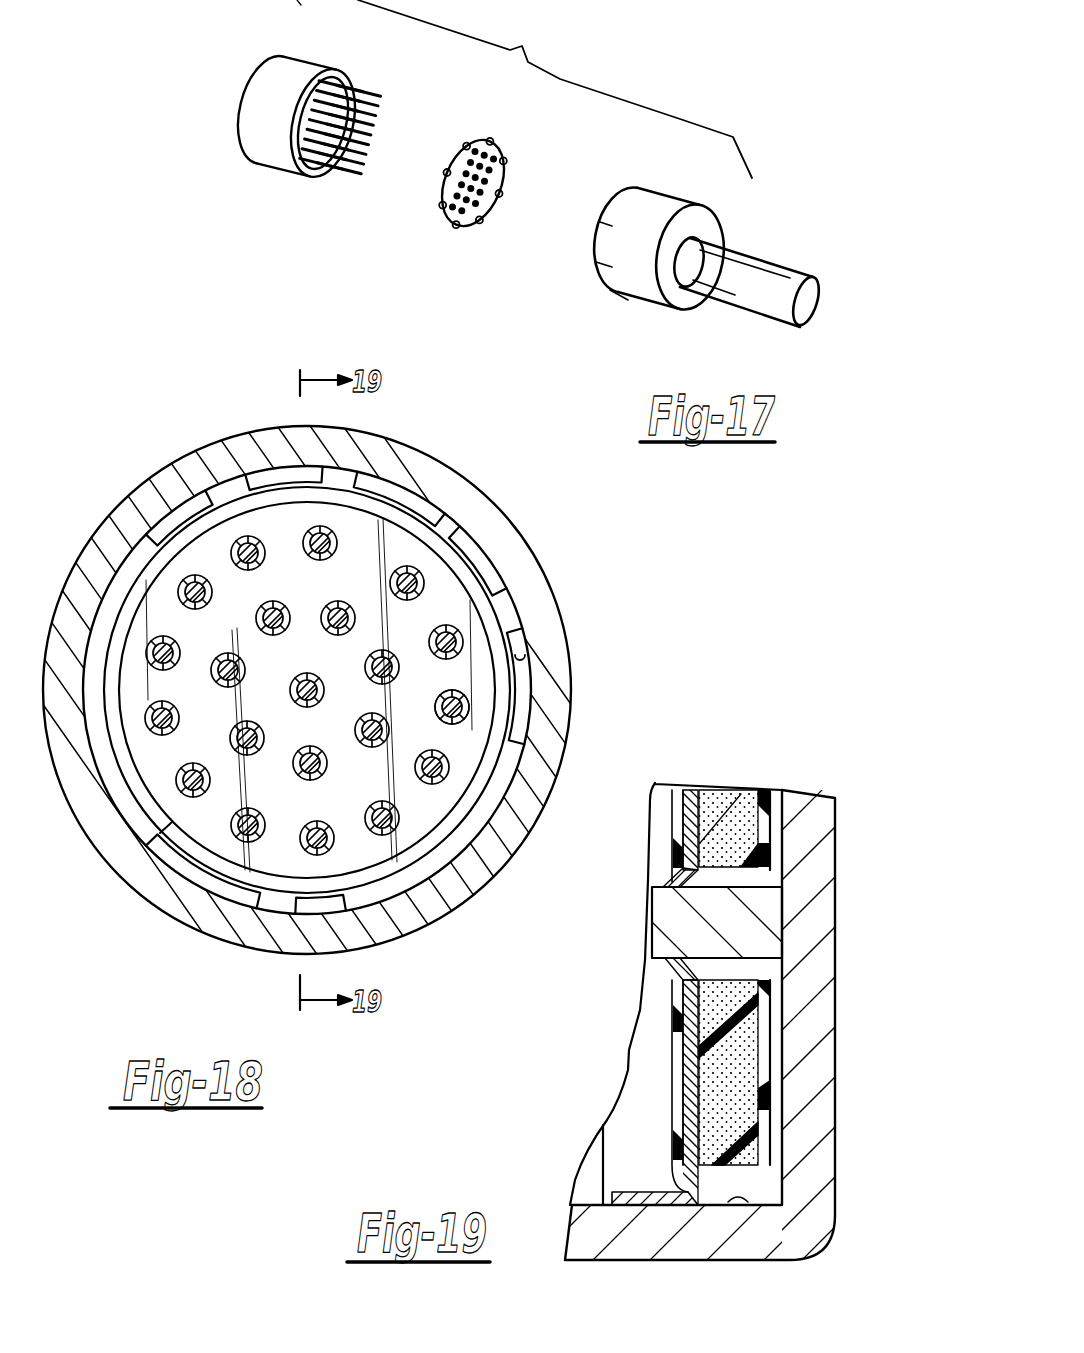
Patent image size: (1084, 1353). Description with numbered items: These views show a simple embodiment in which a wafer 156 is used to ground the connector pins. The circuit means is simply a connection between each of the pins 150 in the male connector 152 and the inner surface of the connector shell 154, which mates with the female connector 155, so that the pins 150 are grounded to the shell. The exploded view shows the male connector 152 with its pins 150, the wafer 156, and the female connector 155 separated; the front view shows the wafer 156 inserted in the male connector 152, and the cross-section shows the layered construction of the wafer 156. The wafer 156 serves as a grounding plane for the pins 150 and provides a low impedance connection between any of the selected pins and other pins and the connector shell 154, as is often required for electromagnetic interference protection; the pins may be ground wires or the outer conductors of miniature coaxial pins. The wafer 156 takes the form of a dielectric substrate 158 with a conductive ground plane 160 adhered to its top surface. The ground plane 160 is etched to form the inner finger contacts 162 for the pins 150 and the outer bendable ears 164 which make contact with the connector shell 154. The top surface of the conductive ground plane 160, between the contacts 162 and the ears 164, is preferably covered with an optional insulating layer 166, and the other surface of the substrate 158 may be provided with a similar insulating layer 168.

In FIG. 17, the pins 150 is at (367, 138).
In FIG. 18, the pins 150 is at (235, 543).
In FIG. 19, the pins 150 is at (676, 920).
In FIG. 17, the male connector 152 is at (302, 77).
In FIG. 18, the male connector 152 is at (225, 452).
In FIG. 19, the male connector 152 is at (815, 893).
In FIG. 18, the connector shell 154 is at (520, 658).
In FIG. 19, the connector shell 154 is at (735, 1204).
In FIG. 17, the female connector 155 is at (660, 204).
In FIG. 19, the female connector 155 is at (598, 1170).
In FIG. 17, the wafer 156 is at (500, 153).
In FIG. 18, the wafer 156 is at (450, 600).
In FIG. 19, the dielectric substrate 158 is at (722, 792).
In FIG. 19, the conductive ground plane 160 is at (690, 788).
In FIG. 18, the inner finger contacts 162 is at (470, 710).
In FIG. 19, the inner finger contacts 162 is at (672, 972).
In FIG. 18, the outer bendable ears 164 is at (435, 522).
In FIG. 19, the outer bendable ears 164 is at (645, 1207).
In FIG. 18, the insulating layer 166 is at (160, 840).
In FIG. 19, the insulating layer 166 is at (672, 788).
In FIG. 19, the insulating layer 168 is at (765, 792).